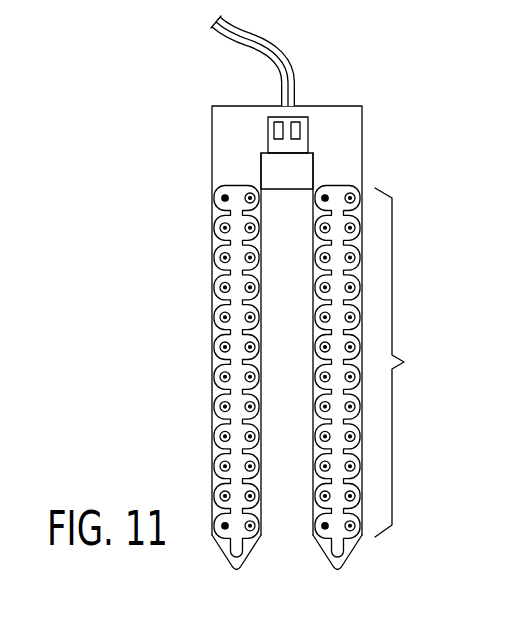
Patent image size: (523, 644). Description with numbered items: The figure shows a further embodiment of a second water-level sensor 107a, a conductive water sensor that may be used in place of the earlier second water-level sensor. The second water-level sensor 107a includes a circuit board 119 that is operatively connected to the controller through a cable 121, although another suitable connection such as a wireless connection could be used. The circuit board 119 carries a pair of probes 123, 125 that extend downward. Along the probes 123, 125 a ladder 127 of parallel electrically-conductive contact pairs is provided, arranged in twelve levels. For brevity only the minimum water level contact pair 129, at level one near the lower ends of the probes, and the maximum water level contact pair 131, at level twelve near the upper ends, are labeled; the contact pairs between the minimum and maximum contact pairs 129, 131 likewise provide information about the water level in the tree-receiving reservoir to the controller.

The second water-level sensor 107a is at (180, 149).
The circuit board 119 is at (355, 150).
The cable 121 is at (272, 53).
The probe 123 is at (212, 365).
The probe 125 is at (322, 555).
The ladder 127 is at (410, 362).
The minimum water level contact pair 129 is at (225, 526).
The maximum water level contact pair 131 is at (325, 198).